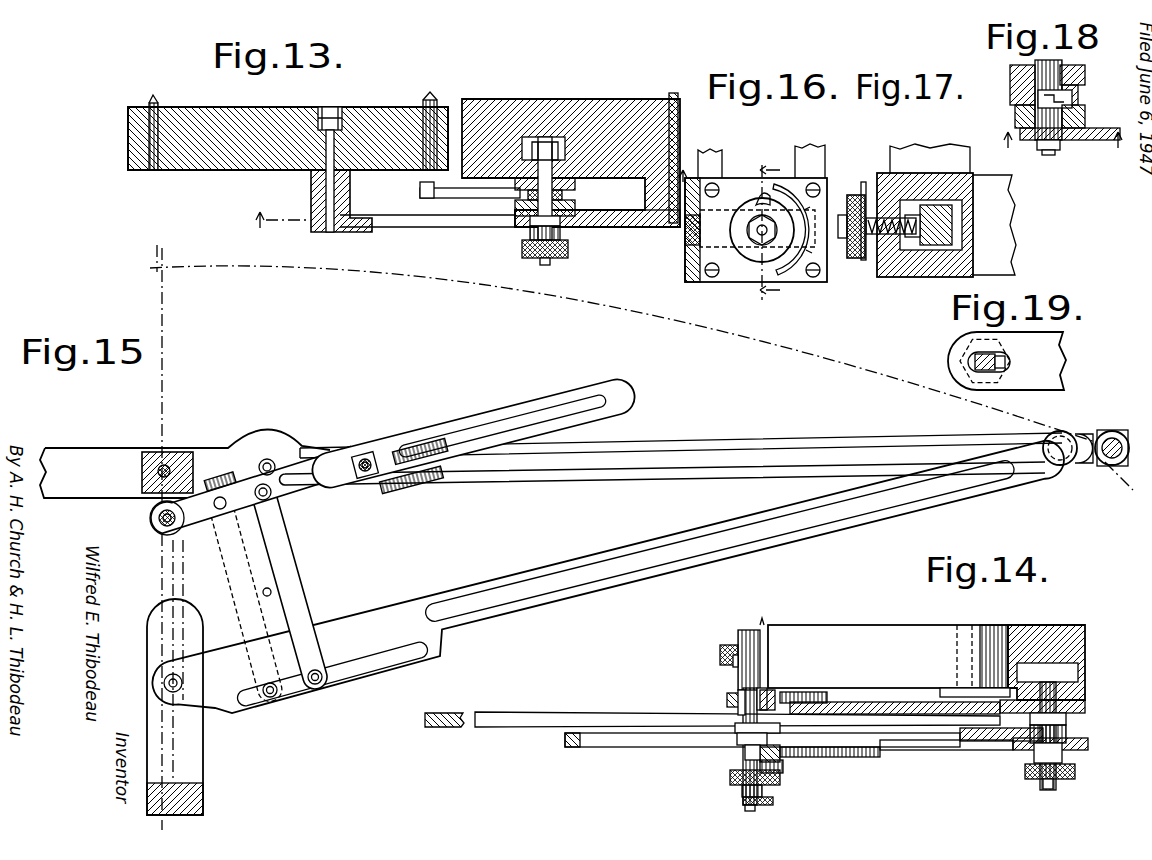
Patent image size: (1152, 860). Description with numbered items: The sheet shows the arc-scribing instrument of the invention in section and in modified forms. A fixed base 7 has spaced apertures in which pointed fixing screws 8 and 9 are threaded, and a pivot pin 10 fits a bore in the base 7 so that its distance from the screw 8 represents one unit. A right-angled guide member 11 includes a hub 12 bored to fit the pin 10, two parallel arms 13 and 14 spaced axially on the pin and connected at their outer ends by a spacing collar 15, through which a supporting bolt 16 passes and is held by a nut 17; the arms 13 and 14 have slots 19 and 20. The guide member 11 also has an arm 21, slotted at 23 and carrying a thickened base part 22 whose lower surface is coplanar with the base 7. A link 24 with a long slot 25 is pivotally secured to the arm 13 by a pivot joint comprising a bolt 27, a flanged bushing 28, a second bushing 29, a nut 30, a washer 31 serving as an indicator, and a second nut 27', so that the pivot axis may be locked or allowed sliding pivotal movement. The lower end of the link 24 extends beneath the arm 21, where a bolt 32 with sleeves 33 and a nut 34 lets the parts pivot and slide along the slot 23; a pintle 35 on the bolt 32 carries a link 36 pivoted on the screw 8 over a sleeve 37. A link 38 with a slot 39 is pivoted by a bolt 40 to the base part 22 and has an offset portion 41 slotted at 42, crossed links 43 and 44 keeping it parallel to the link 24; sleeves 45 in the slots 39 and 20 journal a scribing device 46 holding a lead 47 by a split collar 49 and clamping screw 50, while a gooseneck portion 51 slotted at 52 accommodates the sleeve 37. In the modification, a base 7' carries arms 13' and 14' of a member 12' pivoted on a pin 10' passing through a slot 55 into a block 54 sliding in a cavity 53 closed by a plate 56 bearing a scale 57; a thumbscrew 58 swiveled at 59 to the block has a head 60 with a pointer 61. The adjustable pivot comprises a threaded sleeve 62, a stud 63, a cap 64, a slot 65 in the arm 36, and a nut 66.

In FIG. 13, the base 7 is at (288, 125).
In FIG. 15, the base 7 is at (185, 460).
In FIG. 14, the base 7 is at (888, 642).
In FIG. 16, the base 7' is at (676, 190).
In FIG. 17, the base 7' is at (1006, 225).
In FIG. 18, the base 7' is at (1037, 84).
In FIG. 13, the fixing screw 8 is at (435, 105).
In FIG. 18, the fixing screw 8 is at (1052, 67).
In FIG. 14, the fixing screw 8 is at (972, 623).
In FIG. 13, the fixing screw 9 is at (157, 110).
In FIG. 14, the fixing screw 9 is at (763, 625).
In FIG. 13, the pivot pin 10 is at (330, 182).
In FIG. 15, the pivot pin 10 is at (133, 476).
In FIG. 16, the pivot pin 10' is at (676, 234).
In FIG. 17, the pivot pin 10' is at (984, 241).
In FIG. 13, the right-angled guide member 11 is at (518, 93).
In FIG. 15, the right-angled guide member 11 is at (206, 624).
In FIG. 14, the right-angled guide member 11 is at (1093, 636).
In FIG. 13, the hub 12 is at (322, 201).
In FIG. 15, the hub 12 is at (169, 456).
In FIG. 14, the hub 12 is at (895, 692).
In FIG. 17, the member 12' is at (919, 292).
In FIG. 14, the arm 13 is at (736, 756).
In FIG. 16, the arm 13' is at (802, 152).
In FIG. 15, the arm 14 is at (681, 438).
In FIG. 14, the arm 14 is at (716, 698).
In FIG. 16, the arm 14' is at (709, 152).
In FIG. 17, the arm 14' is at (930, 146).
In FIG. 13, the spacing collar 15 is at (231, 242).
In FIG. 16, the spacing collar 15 is at (687, 166).
In FIG. 15, the spacing collar 15 is at (1117, 482).
In FIG. 15, the supporting bolt 16 is at (1112, 437).
In FIG. 16, the nut 17 is at (778, 232).
In FIG. 18, the slot 19 is at (1063, 149).
In FIG. 14, the slot 19 is at (786, 752).
In FIG. 15, the slot 20 is at (627, 484).
In FIG. 14, the slot 20 is at (740, 700).
In FIG. 13, the arm 21 is at (620, 228).
In FIG. 15, the arm 21 is at (156, 565).
In FIG. 14, the arm 21 is at (983, 750).
In FIG. 13, the thickened base part 22 is at (599, 104).
In FIG. 15, the thickened base part 22 is at (203, 769).
In FIG. 14, the thickened base part 22 is at (1052, 625).
In FIG. 13, the slot 23 is at (441, 228).
In FIG. 15, the slot 23 is at (162, 590).
In FIG. 13, the link 24 is at (575, 208).
In FIG. 15, the link 24 is at (441, 437).
In FIG. 14, the link 24 is at (571, 748).
In FIG. 15, the slot 25 is at (569, 396).
In FIG. 14, the slot 25 is at (640, 748).
In FIG. 15, the bolt 27 is at (363, 450).
In FIG. 14, the bolt 27 is at (723, 813).
In FIG. 14, the nut 27' is at (768, 810).
In FIG. 15, the bushing 28 is at (366, 478).
In FIG. 14, the bushing 28 is at (742, 792).
In FIG. 14, the bushing 29 is at (730, 777).
In FIG. 14, the nut 30 is at (762, 790).
In FIG. 14, the washer 31 is at (783, 766).
In FIG. 13, the bolt 32 is at (545, 264).
In FIG. 15, the bolt 32 is at (180, 527).
In FIG. 14, the bolt 32 is at (1050, 787).
In FIG. 13, the sleeves 33 is at (532, 233).
In FIG. 14, the sleeves 33 is at (1068, 740).
In FIG. 13, the nut 34 is at (567, 254).
In FIG. 14, the nut 34 is at (1078, 772).
In FIG. 13, the pintle 35 is at (528, 196).
In FIG. 13, the link 36 is at (463, 198).
In FIG. 18, the link 36 is at (1035, 142).
In FIG. 19, the link 36 is at (1062, 350).
In FIG. 15, the link 36 is at (240, 470).
In FIG. 14, the link 36 is at (1072, 713).
In FIG. 13, the sleeve 37 is at (420, 190).
In FIG. 14, the sleeve 37 is at (952, 690).
In FIG. 13, the link 38 is at (566, 184).
In FIG. 15, the link 38 is at (546, 604).
In FIG. 14, the link 38 is at (437, 728).
In FIG. 15, the slot 39 is at (779, 545).
In FIG. 14, the slot 39 is at (522, 713).
In FIG. 13, the bolt 40 is at (543, 148).
In FIG. 15, the bolt 40 is at (163, 683).
In FIG. 14, the bolt 40 is at (1045, 675).
In FIG. 15, the offset portion 41 is at (266, 703).
In FIG. 15, the slot 42 is at (361, 686).
In FIG. 15, the crossed link 43 is at (300, 620).
In FIG. 14, the crossed link 43 is at (942, 750).
In FIG. 15, the crossed link 44 is at (275, 539).
In FIG. 14, the crossed link 44 is at (862, 726).
In FIG. 14, the sleeves 45 is at (775, 692).
In FIG. 15, the scribing device 46 is at (1065, 466).
In FIG. 14, the scribing device 46 is at (762, 688).
In FIG. 14, the lead 47 is at (748, 632).
In FIG. 14, the split collar 49 is at (736, 663).
In FIG. 14, the clamping screw 50 is at (722, 652).
In FIG. 15, the gooseneck portion 51 is at (275, 428).
In FIG. 14, the slot 52 is at (842, 692).
In FIG. 17, the cavity 53 is at (965, 208).
In FIG. 16, the block 54 is at (752, 256).
In FIG. 17, the block 54 is at (945, 205).
In FIG. 16, the slot 55 is at (712, 218).
In FIG. 17, the slot 55 is at (960, 226).
In FIG. 16, the plate 56 is at (810, 280).
In FIG. 17, the plate 56 is at (890, 277).
In FIG. 16, the scale 57 is at (795, 258).
In FIG. 17, the thumbscrew 58 is at (876, 208).
In FIG. 17, the swivel 59 is at (914, 205).
In FIG. 16, the head 60 is at (757, 263).
In FIG. 17, the head 60 is at (859, 260).
In FIG. 16, the pointer 61 is at (758, 196).
In FIG. 17, the pointer 61 is at (862, 190).
In FIG. 18, the threaded sleeve 62 is at (1080, 98).
In FIG. 18, the stud 63 is at (1058, 156).
In FIG. 19, the stud 63 is at (982, 370).
In FIG. 18, the cap 64 is at (1015, 116).
In FIG. 19, the cap 64 is at (965, 336).
In FIG. 18, the slot 65 is at (1066, 146).
In FIG. 19, the slot 65 is at (1010, 364).
In FIG. 18, the nut 66 is at (1048, 156).